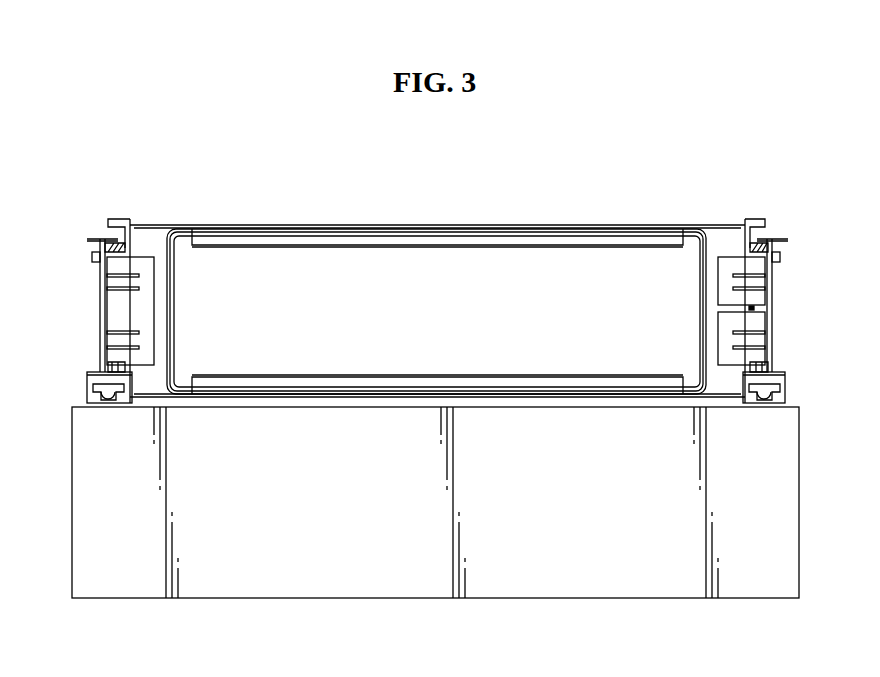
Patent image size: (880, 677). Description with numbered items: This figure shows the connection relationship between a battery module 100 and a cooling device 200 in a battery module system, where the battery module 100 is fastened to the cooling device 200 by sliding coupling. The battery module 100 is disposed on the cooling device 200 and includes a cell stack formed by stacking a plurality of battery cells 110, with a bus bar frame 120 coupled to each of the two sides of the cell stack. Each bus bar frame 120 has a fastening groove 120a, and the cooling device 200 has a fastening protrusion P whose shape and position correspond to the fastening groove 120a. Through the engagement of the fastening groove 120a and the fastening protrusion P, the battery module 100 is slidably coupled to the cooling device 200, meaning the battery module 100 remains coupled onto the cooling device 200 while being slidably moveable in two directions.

The battery module 100 is at (255, 209).
The battery cell 110 is at (451, 225).
The bus bar frame 120 is at (99, 280).
The fastening groove 120a is at (97, 392).
The fastening protrusion P is at (108, 394).
The cooling device 200 is at (347, 600).